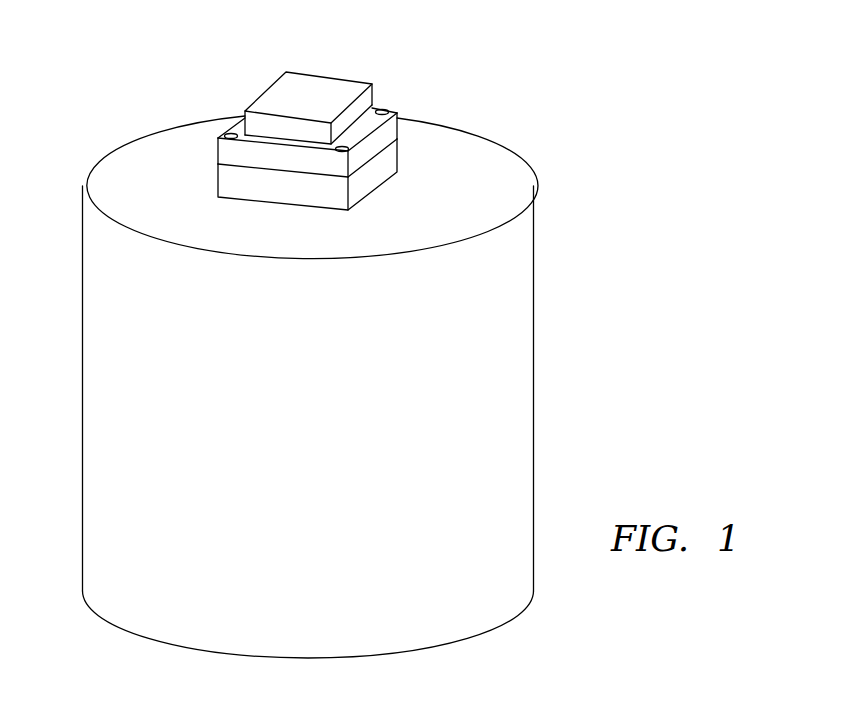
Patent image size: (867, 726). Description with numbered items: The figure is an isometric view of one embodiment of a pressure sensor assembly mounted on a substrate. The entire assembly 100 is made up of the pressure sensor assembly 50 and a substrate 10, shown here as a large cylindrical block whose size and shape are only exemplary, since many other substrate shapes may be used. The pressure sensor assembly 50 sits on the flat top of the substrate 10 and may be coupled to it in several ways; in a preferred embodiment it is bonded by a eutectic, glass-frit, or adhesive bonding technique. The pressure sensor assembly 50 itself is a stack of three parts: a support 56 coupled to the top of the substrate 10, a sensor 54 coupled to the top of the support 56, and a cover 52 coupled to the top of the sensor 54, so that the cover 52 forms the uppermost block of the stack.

The substrate 10 is at (534, 328).
The pressure sensor assembly 50 is at (259, 128).
The cover 52 is at (280, 95).
The sensor 54 is at (232, 152).
The support 56 is at (235, 180).
The entire assembly 100 is at (361, 352).